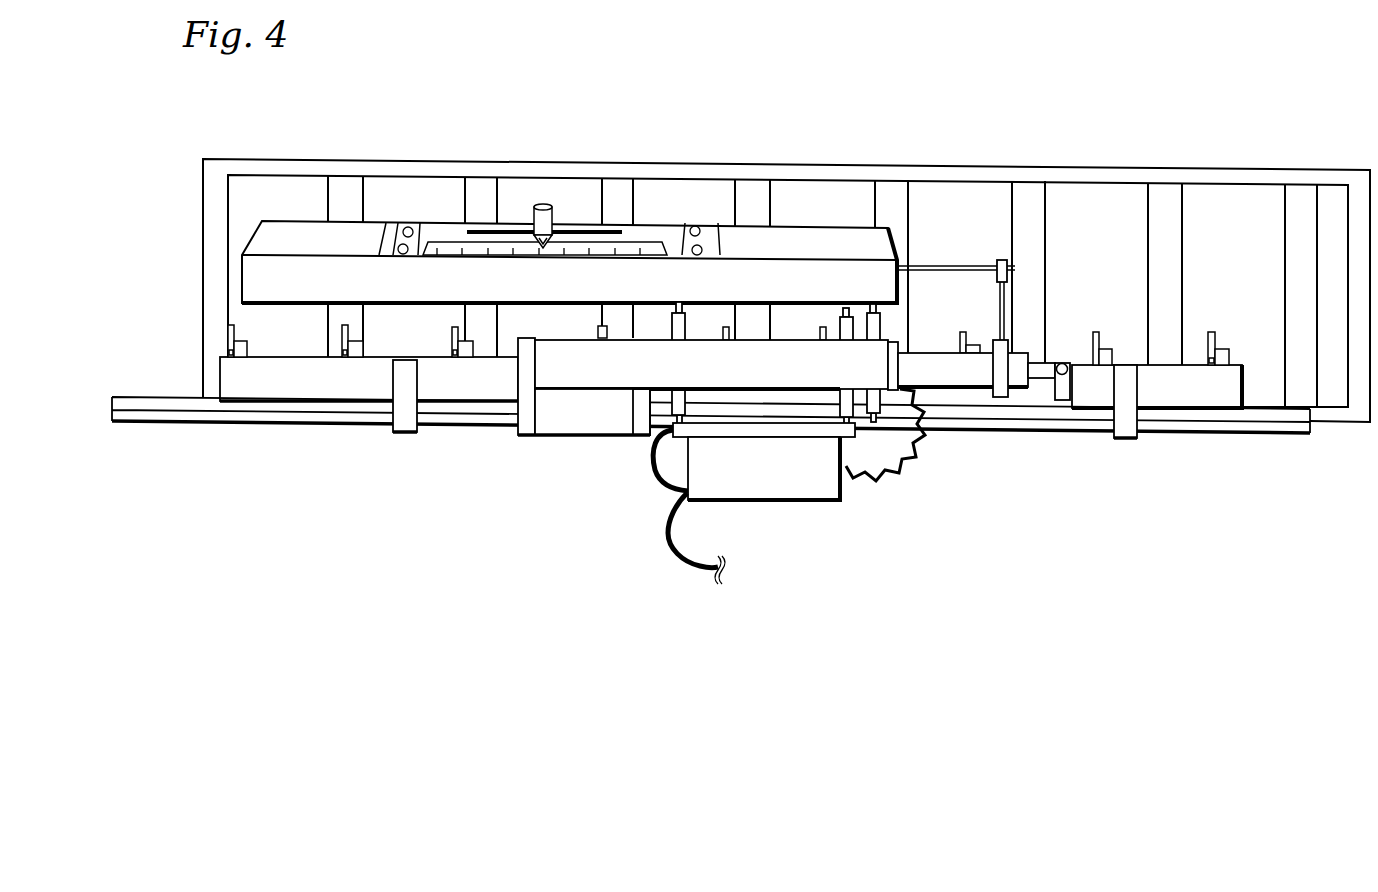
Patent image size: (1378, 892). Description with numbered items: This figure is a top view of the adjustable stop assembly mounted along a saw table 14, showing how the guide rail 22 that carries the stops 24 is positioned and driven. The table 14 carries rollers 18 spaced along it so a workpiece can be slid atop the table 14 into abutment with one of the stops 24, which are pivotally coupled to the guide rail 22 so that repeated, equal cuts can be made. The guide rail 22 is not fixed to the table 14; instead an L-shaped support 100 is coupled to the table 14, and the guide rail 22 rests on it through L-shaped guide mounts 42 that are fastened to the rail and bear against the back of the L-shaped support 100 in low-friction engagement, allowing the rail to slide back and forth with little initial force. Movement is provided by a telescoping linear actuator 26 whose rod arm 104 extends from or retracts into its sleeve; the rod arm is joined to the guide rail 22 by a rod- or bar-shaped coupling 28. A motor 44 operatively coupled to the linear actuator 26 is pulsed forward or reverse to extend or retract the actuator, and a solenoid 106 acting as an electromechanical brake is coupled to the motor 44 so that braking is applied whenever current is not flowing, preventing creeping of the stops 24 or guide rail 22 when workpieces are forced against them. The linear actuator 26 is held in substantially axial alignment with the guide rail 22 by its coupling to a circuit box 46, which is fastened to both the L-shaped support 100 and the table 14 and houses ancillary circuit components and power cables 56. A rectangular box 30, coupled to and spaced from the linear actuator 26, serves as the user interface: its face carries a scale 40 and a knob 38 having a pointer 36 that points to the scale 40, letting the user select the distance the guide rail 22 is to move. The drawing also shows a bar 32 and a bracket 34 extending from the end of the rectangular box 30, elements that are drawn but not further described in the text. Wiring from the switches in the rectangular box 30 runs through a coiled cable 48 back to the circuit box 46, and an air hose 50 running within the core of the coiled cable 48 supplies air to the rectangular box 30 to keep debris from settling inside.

The table 14 is at (1360, 203).
The rollers 18 is at (1300, 368).
The guide rail 22 is at (1175, 388).
The stops 24 is at (228, 325).
The linear actuator 26 is at (597, 362).
The coupling 28 is at (1060, 372).
The rectangular box 30 is at (808, 245).
The rod 32 is at (929, 268).
The bracket 34 is at (1001, 260).
The pointer 36 is at (548, 236).
The knob 38 is at (540, 213).
The scale 40 is at (633, 250).
The guide mounts 42 is at (405, 410).
The motor 44 is at (555, 425).
The circuit box 46 is at (760, 478).
The coiled cable 48 is at (884, 422).
The air hose 50 is at (908, 458).
The power cables 56 is at (698, 572).
The L-shaped support 100 is at (1239, 432).
The rod arm 104 is at (960, 365).
The solenoid 106 is at (645, 425).